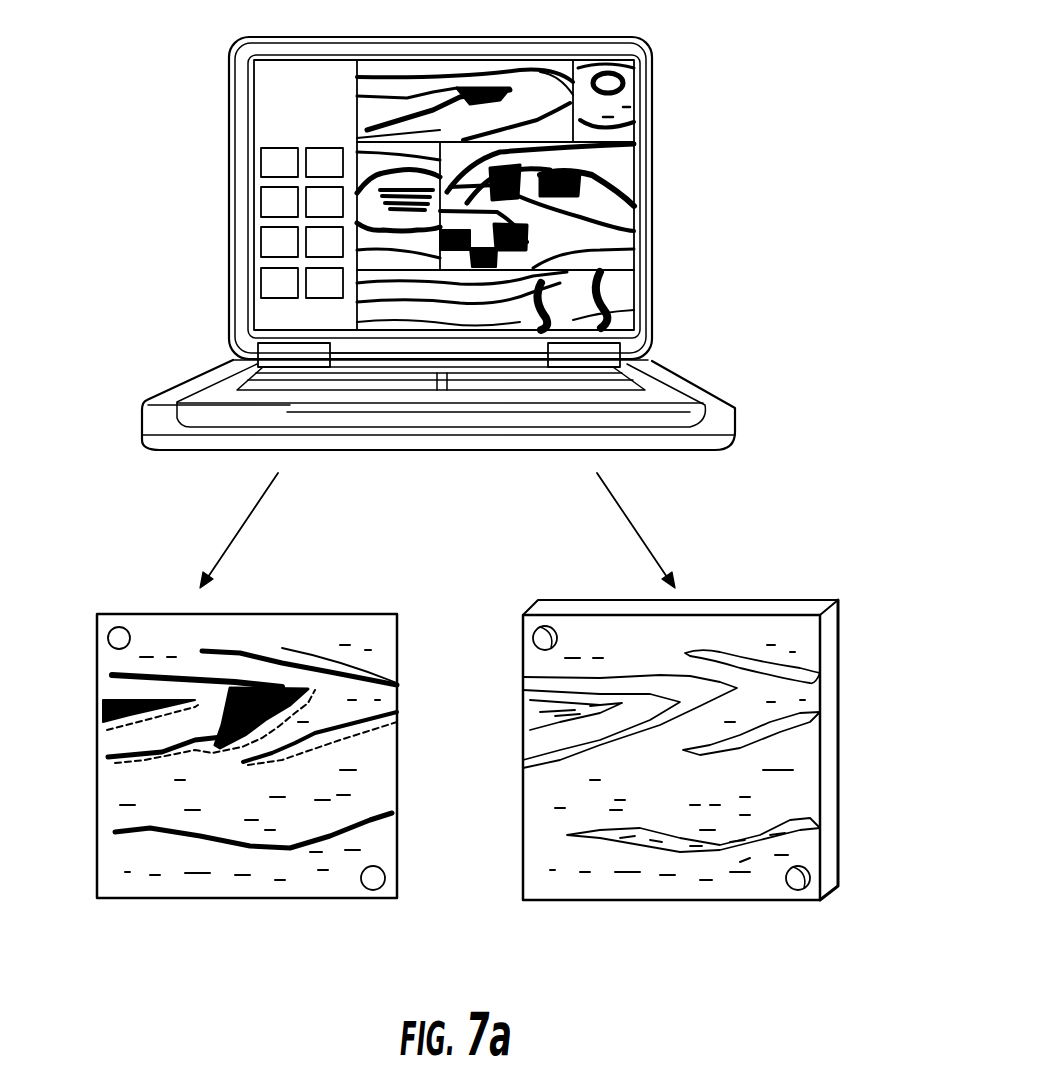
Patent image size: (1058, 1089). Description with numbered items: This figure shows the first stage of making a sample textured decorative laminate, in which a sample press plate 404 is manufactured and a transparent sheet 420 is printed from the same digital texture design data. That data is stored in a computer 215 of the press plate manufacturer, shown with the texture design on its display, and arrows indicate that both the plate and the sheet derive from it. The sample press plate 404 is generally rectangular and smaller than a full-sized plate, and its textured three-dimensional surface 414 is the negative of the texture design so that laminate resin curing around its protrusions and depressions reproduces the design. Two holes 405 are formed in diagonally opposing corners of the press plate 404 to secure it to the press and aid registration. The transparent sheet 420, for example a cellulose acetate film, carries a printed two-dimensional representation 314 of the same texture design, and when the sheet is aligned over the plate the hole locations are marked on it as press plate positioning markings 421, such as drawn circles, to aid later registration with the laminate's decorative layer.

The computer 215 is at (645, 120).
The two-dimensional representation 314 is at (126, 766).
The sample press plate 404 is at (716, 743).
The holes 405 is at (800, 880).
The three-dimensional surface 414 is at (790, 723).
The transparent sheet 420 is at (236, 790).
The press plate positioning markings 421 is at (373, 878).